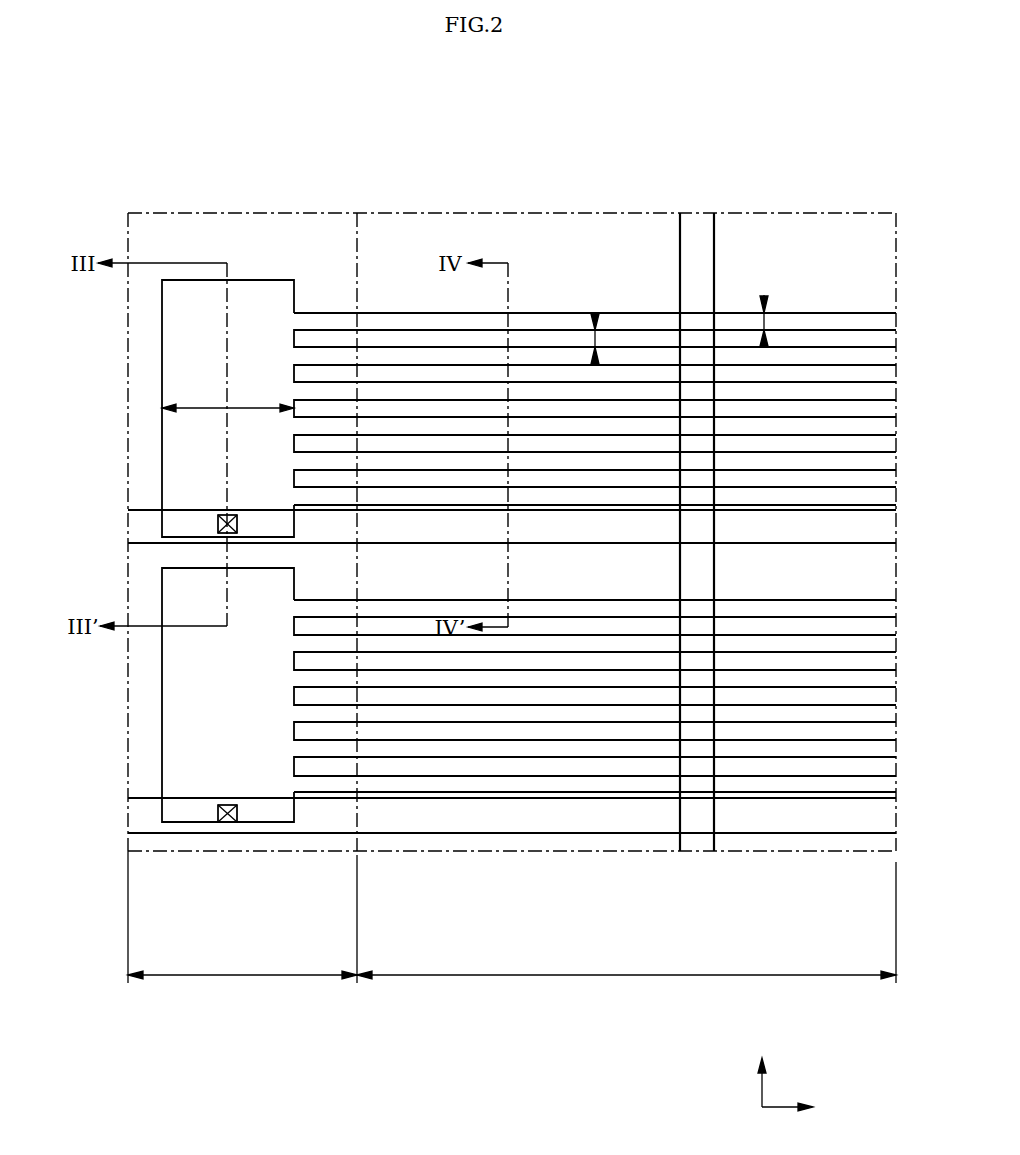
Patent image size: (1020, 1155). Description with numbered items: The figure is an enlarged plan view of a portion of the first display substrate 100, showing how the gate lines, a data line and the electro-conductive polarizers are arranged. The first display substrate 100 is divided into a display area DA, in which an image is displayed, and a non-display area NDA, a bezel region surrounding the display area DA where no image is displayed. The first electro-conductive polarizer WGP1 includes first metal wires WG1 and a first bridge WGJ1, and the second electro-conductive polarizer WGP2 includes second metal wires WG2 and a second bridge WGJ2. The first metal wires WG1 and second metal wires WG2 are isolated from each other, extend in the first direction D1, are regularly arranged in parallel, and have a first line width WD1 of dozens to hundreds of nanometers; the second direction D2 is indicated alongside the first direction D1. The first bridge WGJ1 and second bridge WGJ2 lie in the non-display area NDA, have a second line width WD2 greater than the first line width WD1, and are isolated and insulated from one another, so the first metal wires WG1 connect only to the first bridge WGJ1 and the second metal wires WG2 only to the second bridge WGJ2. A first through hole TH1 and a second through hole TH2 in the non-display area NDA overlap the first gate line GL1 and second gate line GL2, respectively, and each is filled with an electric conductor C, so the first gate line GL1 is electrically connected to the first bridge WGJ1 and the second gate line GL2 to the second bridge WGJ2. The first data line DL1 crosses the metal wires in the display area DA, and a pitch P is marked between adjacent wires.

The first display substrate 100 is at (576, 101).
The first electro-conductive polarizer WGP1 is at (529, 322).
The first bridge WGJ1 is at (262, 280).
The first metal wires WG1 is at (395, 318).
The second electro-conductive polarizer WGP2 is at (529, 766).
The second bridge WGJ2 is at (252, 780).
The second metal wires WG2 is at (388, 748).
The first gate line GL1 is at (138, 526).
The second gate line GL2 is at (138, 814).
The first data line DL1 is at (697, 222).
The first through hole TH1 is at (225, 533).
The second through hole TH2 is at (225, 822).
The electric conductor C is at (218, 524).
The pitch of wire grid P is at (595, 338).
The first line width WD1 is at (764, 321).
The second line width WD2 is at (228, 395).
The non-display area NDA is at (242, 989).
The display area DA is at (626, 989).
The first direction D1 is at (805, 1109).
The second direction D2 is at (762, 1068).